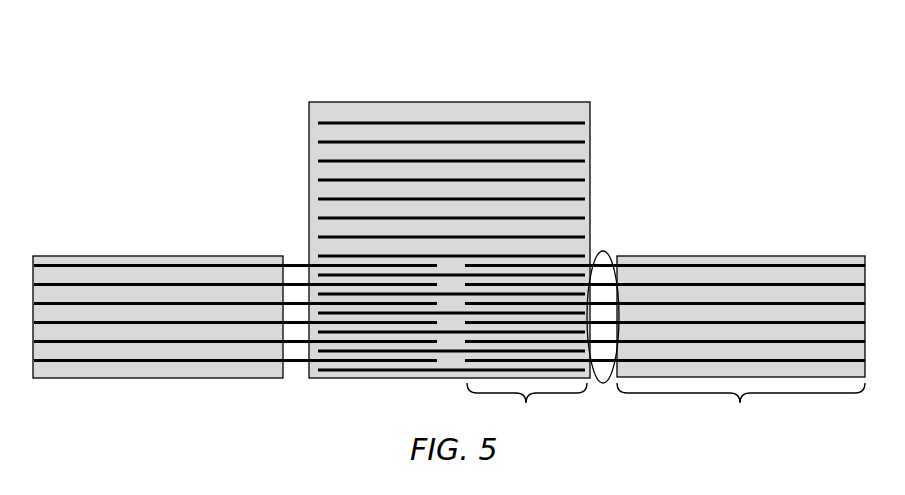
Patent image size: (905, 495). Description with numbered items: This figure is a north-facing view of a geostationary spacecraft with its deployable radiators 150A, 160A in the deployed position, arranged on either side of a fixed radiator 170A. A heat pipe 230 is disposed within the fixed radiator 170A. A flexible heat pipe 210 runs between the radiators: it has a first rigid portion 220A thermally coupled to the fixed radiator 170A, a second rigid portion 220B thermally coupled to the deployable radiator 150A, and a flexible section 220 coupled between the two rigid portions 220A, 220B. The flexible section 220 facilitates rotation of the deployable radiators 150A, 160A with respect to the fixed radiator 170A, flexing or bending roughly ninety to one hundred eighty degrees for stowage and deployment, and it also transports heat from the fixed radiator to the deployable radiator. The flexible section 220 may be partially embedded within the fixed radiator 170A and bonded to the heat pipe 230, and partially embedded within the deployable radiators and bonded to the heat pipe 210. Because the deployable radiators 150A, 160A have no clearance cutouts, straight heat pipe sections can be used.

The deployable radiator 150A is at (692, 250).
The deployable radiator 160A is at (78, 250).
The fixed radiator 170A is at (453, 98).
The flexible heat pipe 210 is at (779, 278).
The flexible section 220 is at (602, 376).
The first rigid portion 220A is at (527, 407).
The second rigid portion 220B is at (741, 407).
The heat pipe 230 is at (350, 193).